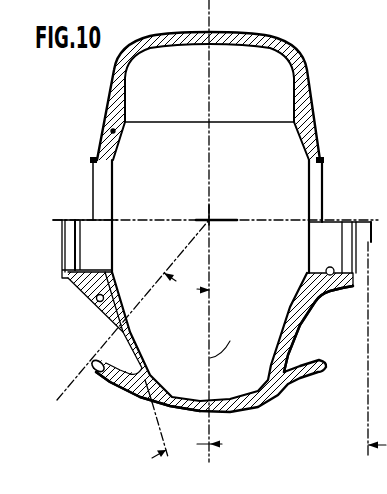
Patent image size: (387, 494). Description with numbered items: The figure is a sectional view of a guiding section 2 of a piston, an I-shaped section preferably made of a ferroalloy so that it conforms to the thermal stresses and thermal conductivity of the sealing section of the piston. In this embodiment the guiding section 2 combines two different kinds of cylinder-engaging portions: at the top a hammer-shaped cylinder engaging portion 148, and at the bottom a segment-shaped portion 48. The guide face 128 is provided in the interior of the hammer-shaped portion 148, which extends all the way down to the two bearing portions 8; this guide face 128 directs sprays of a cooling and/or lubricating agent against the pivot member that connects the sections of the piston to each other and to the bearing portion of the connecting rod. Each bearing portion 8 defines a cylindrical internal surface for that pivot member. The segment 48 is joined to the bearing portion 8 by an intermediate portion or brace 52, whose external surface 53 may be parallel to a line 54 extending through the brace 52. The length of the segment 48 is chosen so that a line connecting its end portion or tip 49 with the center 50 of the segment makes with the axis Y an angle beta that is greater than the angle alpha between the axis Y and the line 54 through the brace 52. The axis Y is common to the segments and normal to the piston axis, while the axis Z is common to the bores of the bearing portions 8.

The hammer-shaped cylinder engaging portion 148 is at (262, 33).
The guide face 128 is at (258, 107).
The guiding section 2 is at (326, 148).
The external surface of the brace 53 is at (116, 134).
The center of the segment 50 is at (211, 218).
The intermediate portion or brace 52 is at (136, 348).
The end portion or tip of the segment 49 is at (94, 374).
The line through the brace 54 is at (155, 420).
The segment-shaped cylinder engaging portion 48 is at (317, 449).
The bearing portion 8 is at (333, 288).